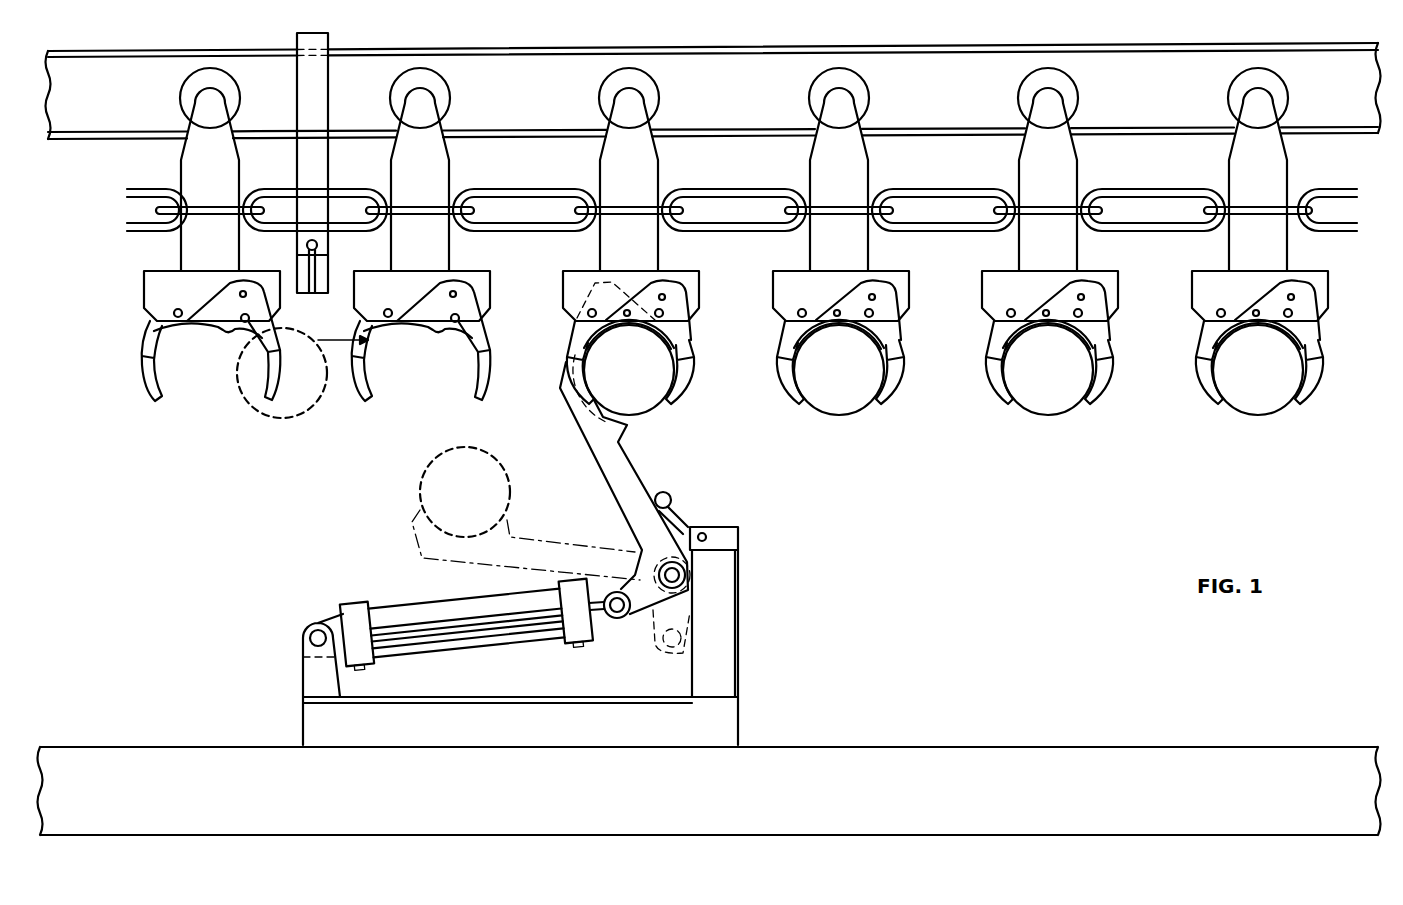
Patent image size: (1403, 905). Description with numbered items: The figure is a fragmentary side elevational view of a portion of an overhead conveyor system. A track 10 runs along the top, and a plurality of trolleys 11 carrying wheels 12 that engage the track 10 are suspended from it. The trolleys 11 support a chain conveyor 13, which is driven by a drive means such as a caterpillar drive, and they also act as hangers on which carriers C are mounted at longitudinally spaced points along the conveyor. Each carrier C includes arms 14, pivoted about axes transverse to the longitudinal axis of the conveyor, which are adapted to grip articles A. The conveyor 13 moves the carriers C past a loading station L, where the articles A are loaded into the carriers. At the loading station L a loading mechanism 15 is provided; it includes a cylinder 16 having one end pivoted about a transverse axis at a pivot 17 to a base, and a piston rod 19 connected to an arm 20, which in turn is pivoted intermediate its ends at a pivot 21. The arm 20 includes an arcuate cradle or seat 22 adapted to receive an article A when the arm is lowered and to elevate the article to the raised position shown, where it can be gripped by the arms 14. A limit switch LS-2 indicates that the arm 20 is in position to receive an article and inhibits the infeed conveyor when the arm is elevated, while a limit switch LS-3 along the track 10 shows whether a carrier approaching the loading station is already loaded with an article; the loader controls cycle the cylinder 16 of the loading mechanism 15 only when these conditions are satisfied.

The track 10 is at (928, 50).
The trolley 11 is at (608, 162).
The wheel 12 is at (185, 96).
The chain conveyor 13 is at (731, 192).
The arm 14 is at (571, 362).
The loading mechanism 15 is at (386, 590).
The cylinder 16 is at (503, 642).
The pivot 17 is at (311, 644).
The piston rod 19 is at (599, 618).
The arm 20 is at (637, 475).
The pivot 21 is at (688, 577).
The arcuate cradle 22 is at (610, 416).
The article A is at (270, 418).
The carrier C is at (152, 289).
The loading station L is at (300, 610).
The limit switch LS-2 is at (740, 537).
The limit switch LS-3 is at (320, 238).